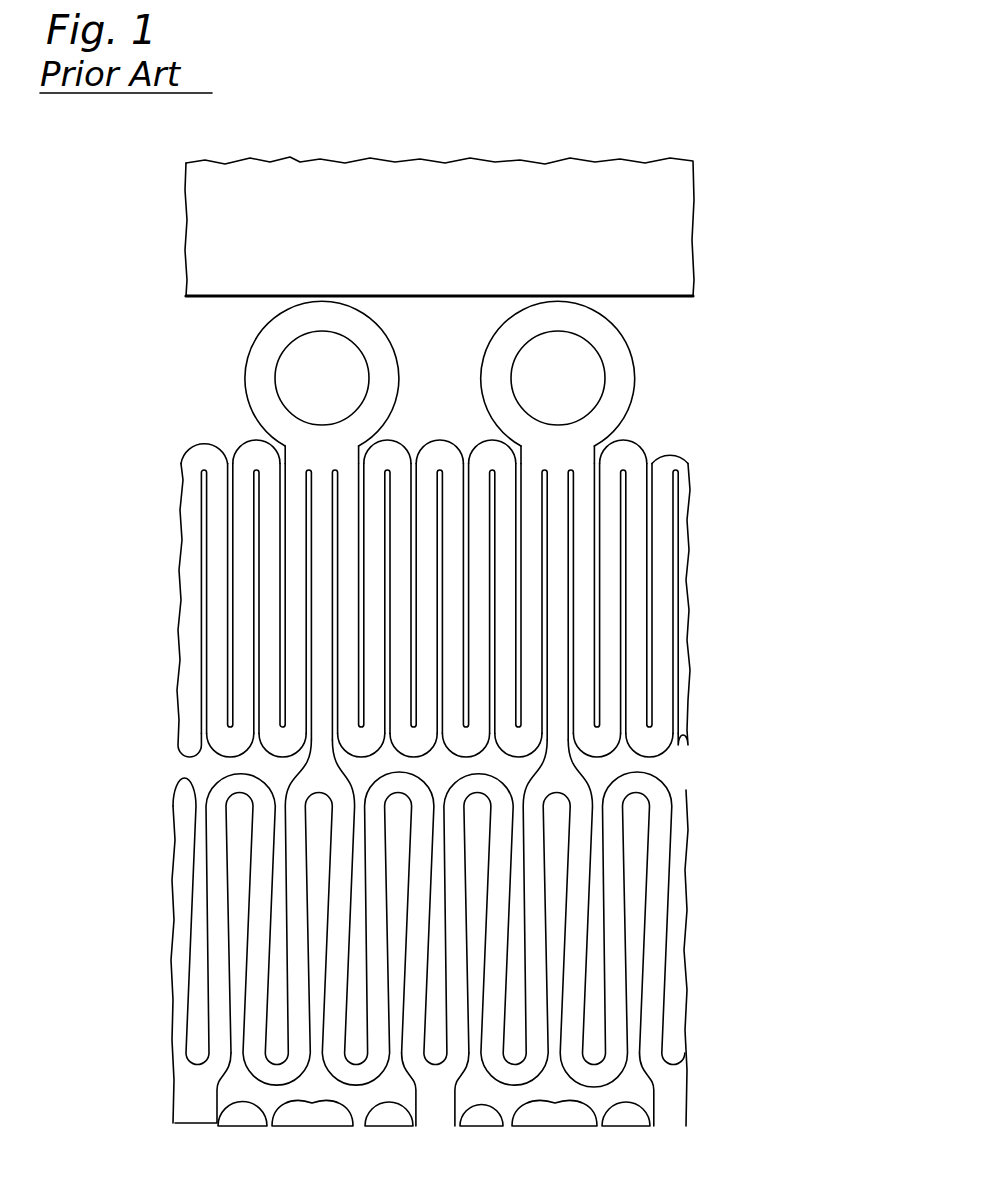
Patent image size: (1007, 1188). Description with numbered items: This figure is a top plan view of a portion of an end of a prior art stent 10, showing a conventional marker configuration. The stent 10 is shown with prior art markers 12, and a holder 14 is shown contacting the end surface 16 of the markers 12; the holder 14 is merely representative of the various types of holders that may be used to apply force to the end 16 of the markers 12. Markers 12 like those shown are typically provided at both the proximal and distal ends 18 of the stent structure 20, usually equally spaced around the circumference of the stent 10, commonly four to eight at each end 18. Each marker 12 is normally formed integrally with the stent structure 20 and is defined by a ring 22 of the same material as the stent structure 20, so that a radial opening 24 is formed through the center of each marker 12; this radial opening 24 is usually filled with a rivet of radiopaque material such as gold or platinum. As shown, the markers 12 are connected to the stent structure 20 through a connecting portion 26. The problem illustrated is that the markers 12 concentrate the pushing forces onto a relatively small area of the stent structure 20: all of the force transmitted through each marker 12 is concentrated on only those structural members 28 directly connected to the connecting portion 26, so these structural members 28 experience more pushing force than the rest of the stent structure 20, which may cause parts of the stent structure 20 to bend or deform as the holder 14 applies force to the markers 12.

The stent 10 is at (782, 703).
The markers 12 is at (248, 374).
The holder 14 is at (674, 305).
The end surface 16 is at (556, 303).
The ends 18 is at (170, 463).
The stent structure 20 is at (691, 587).
The ring 22 is at (252, 378).
The radial opening 24 is at (330, 372).
The connecting portion 26 is at (320, 445).
The structural members 28 is at (343, 527).